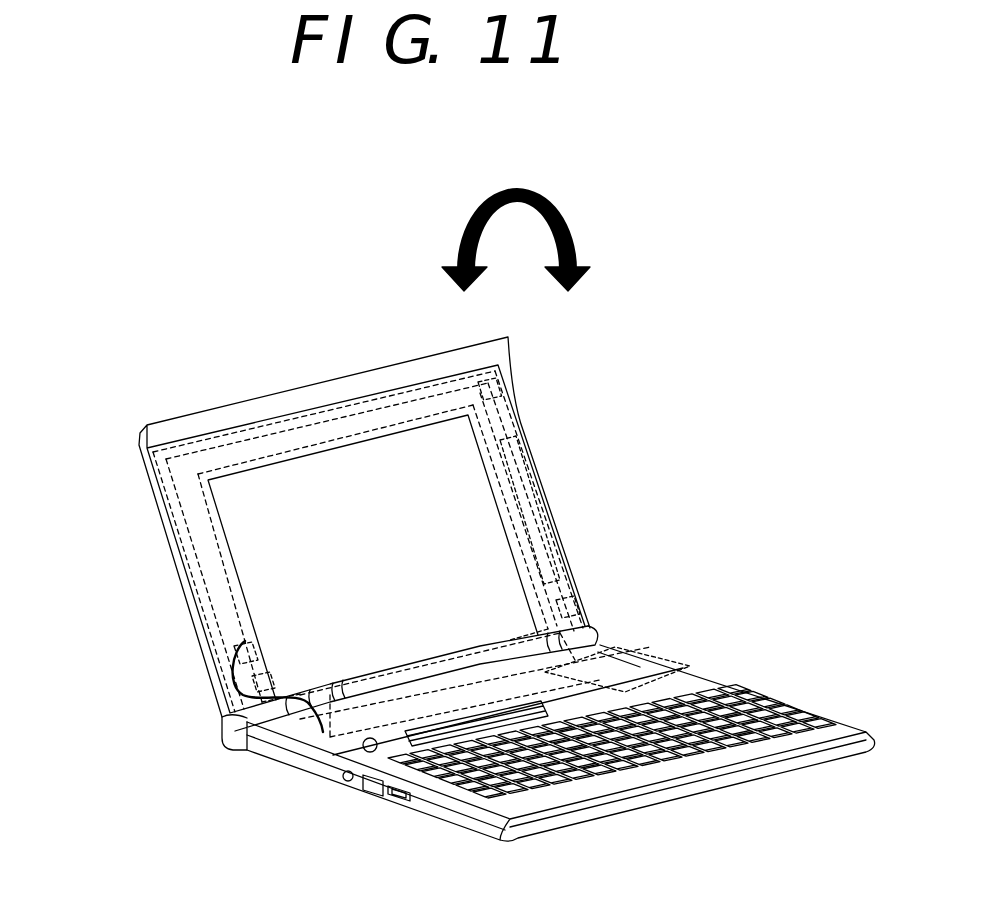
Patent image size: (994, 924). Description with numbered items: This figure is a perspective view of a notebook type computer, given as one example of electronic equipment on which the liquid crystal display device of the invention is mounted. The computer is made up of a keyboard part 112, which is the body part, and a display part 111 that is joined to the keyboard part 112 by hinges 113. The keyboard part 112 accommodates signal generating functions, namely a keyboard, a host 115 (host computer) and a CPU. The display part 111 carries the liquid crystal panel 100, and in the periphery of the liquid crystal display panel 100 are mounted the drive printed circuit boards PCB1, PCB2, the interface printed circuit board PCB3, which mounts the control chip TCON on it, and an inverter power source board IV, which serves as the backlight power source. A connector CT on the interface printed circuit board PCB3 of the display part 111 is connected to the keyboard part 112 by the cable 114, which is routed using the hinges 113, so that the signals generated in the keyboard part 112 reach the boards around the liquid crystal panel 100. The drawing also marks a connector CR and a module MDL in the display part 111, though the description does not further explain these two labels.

The display part 111 is at (222, 405).
The liquid crystal panel 100 is at (260, 563).
The drive printed circuit board PCB1 is at (428, 398).
The drive printed circuit board PCB2 is at (515, 437).
The interface printed circuit board PCB3 is at (196, 518).
The control chip TCON is at (272, 678).
The connector CR is at (505, 385).
The inverter power source board IV is at (540, 475).
The module MDL is at (573, 607).
The connector CT is at (236, 640).
The cable 114 is at (214, 687).
The hinges 113 is at (290, 705).
The host 115 is at (607, 652).
The element CPU is at (658, 662).
The keyboard part 112 is at (693, 757).